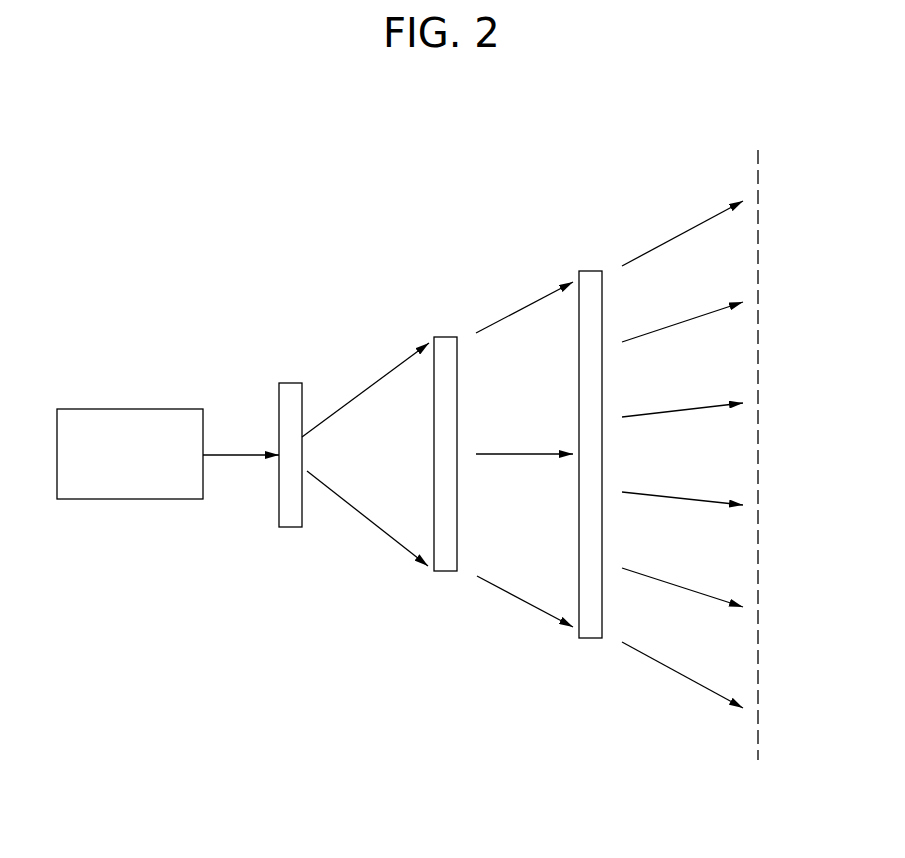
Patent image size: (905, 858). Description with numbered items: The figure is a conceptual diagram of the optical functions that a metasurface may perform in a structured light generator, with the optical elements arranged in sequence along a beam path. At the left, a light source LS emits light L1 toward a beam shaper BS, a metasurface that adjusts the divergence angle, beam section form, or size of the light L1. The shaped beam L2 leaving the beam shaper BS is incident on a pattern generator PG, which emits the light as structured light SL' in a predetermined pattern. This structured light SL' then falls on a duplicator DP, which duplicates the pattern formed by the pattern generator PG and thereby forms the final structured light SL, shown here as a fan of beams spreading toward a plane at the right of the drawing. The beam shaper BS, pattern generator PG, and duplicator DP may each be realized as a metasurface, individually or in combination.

The light source LS is at (124, 417).
The beam shaper BS is at (292, 388).
The pattern generator PG is at (447, 337).
The duplicator DP is at (592, 271).
The light emitted from the light source L1 is at (241, 437).
The beam shaped by the beam shaper L2 is at (365, 454).
The structured light SL' is at (524, 454).
The final structured light SL is at (682, 454).